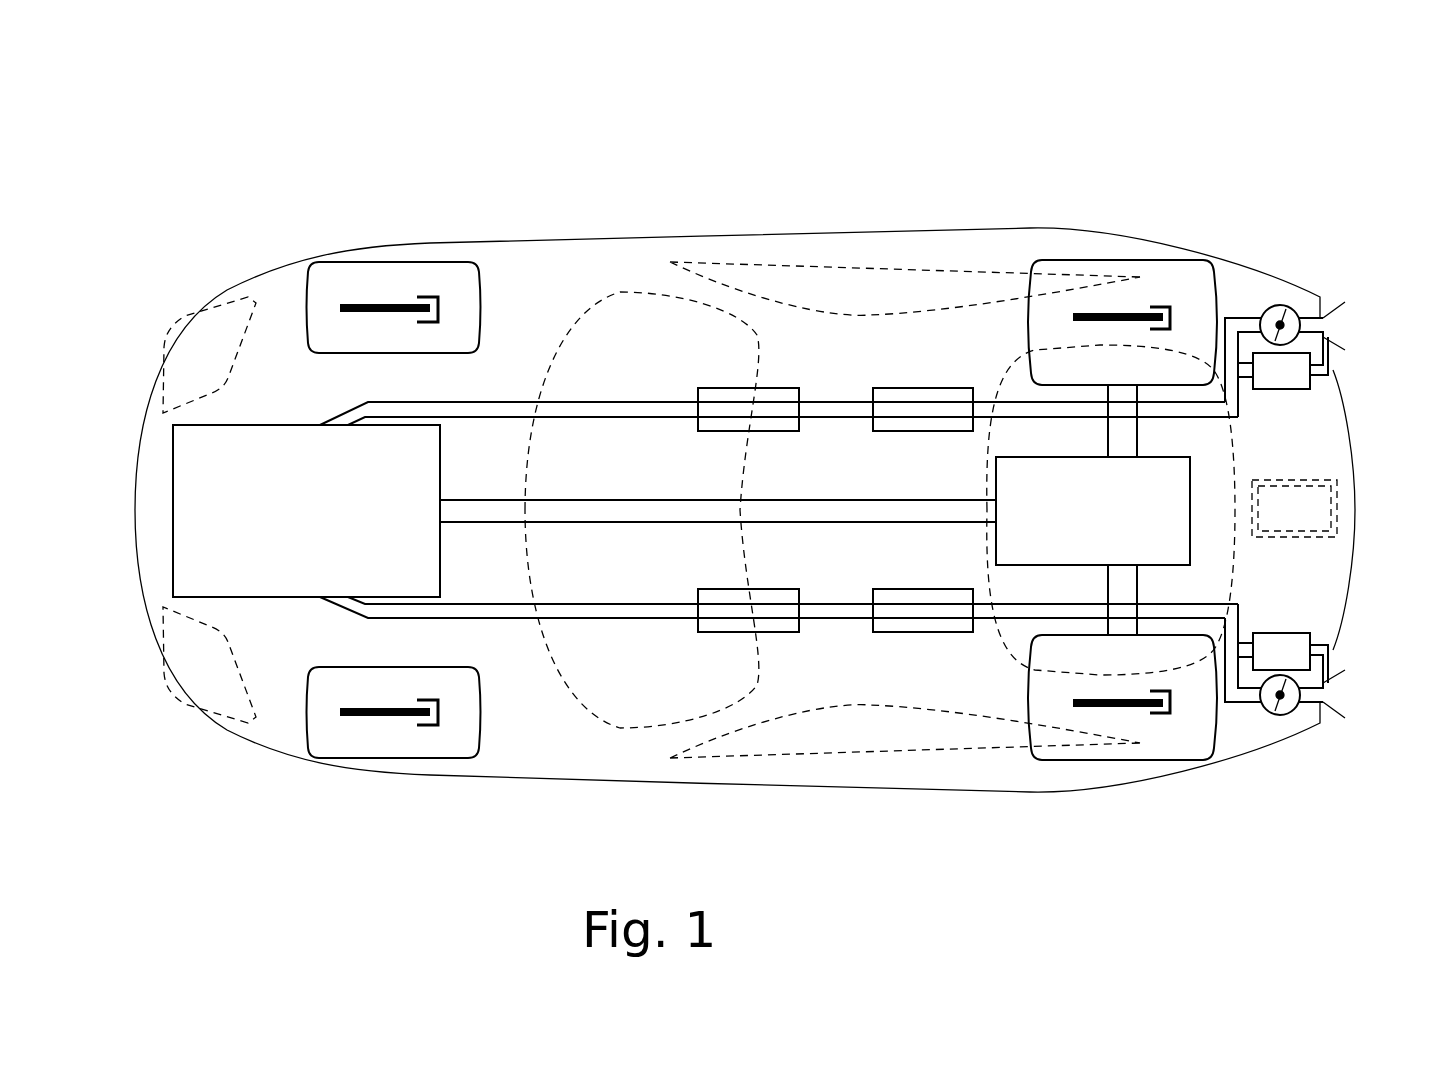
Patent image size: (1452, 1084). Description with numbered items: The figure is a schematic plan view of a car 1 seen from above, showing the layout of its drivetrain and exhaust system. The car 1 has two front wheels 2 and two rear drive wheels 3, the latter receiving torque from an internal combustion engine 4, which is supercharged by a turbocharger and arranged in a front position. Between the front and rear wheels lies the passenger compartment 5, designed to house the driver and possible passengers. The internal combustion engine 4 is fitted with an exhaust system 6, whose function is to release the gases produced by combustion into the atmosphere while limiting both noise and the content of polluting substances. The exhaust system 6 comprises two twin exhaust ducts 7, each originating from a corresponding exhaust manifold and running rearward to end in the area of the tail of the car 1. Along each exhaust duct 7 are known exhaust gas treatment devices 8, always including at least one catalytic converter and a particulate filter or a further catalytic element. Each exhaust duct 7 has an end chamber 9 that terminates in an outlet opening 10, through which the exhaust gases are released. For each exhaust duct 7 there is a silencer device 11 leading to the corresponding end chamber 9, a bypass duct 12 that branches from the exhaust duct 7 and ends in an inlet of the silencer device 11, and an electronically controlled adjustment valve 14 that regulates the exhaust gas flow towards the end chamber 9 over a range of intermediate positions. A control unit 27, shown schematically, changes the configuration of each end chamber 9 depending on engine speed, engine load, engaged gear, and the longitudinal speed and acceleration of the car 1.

The car 1 is at (266, 852).
The front wheels 2 is at (404, 277).
The rear drive wheels 3 is at (1200, 278).
The internal combustion engine 4 is at (297, 462).
The passenger compartment 5 is at (804, 794).
The exhaust system 6 is at (836, 123).
The exhaust ducts 7 is at (510, 412).
The exhaust gas treatment devices 8 is at (780, 400).
The end chamber 9 is at (1266, 250).
The outlet opening 10 is at (1360, 322).
The silencer device 11 is at (1280, 368).
The bypass duct 12 is at (1331, 360).
The adjustment valve 14 is at (1290, 302).
The control unit 27 is at (1294, 508).